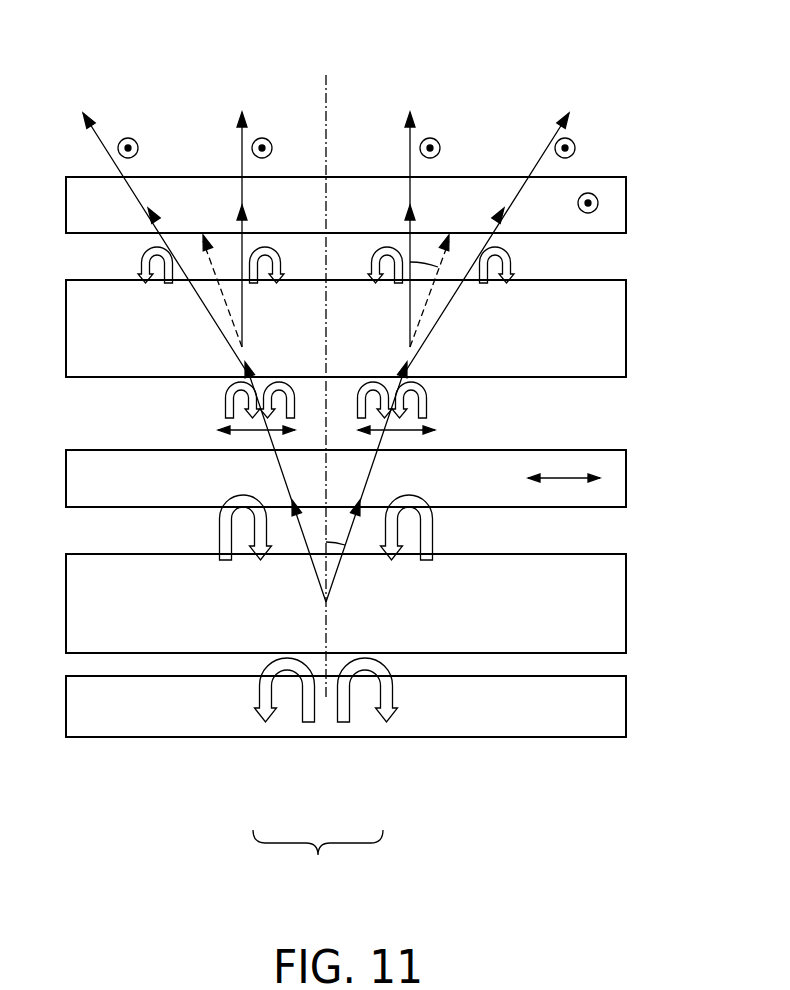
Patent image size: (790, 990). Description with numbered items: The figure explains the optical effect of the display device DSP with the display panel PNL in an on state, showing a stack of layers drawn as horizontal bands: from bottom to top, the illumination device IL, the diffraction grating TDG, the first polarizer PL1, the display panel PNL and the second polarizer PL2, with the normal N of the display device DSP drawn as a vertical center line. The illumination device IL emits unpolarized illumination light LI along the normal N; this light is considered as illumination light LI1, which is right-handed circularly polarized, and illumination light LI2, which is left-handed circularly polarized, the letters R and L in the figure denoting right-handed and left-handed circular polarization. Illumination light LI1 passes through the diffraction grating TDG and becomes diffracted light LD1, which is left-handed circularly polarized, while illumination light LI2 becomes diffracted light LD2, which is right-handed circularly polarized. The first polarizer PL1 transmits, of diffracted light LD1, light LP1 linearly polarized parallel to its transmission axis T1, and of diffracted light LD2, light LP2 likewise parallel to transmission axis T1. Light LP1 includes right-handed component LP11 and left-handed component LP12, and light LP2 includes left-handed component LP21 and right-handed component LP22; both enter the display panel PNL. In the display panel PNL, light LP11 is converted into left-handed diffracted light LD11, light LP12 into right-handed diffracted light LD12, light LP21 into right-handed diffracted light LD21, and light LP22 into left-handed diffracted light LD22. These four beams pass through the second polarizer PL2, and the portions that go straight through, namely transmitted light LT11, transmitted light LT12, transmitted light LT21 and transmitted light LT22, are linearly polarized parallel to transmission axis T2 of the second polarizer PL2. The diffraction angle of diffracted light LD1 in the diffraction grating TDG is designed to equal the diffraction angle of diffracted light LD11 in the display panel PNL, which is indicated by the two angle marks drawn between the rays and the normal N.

The second polarizer PL2 is at (627, 205).
The display panel PNL is at (627, 330).
The first polarizer PL1 is at (627, 478).
The diffraction grating TDG is at (627, 605).
The illumination device IL is at (627, 710).
The normal N is at (329, 88).
The transmitted light LT22 is at (97, 128).
The transmitted light LT12 is at (550, 128).
The transmitted light LT21 is at (249, 135).
The transmitted light LT11 is at (420, 135).
The transmission axis T2 is at (592, 193).
The diffracted light LD22 is at (141, 262).
The diffracted light LD21 is at (268, 246).
The diffracted light LD11 is at (387, 246).
The diffracted light LD12 is at (511, 262).
The light LP22 is at (225, 400).
The light LP21 is at (291, 381).
The light LP11 is at (360, 381).
The light LP12 is at (427, 400).
The light LP2 is at (240, 434).
The light LP1 is at (415, 434).
The transmission axis T1 is at (572, 477).
The diffracted light LD2 is at (219, 532).
The diffracted light LD1 is at (433, 532).
The illumination light LI2 is at (305, 723).
The illumination light LI1 is at (345, 723).
The illumination light LI is at (318, 858).
The display device DSP is at (551, 874).